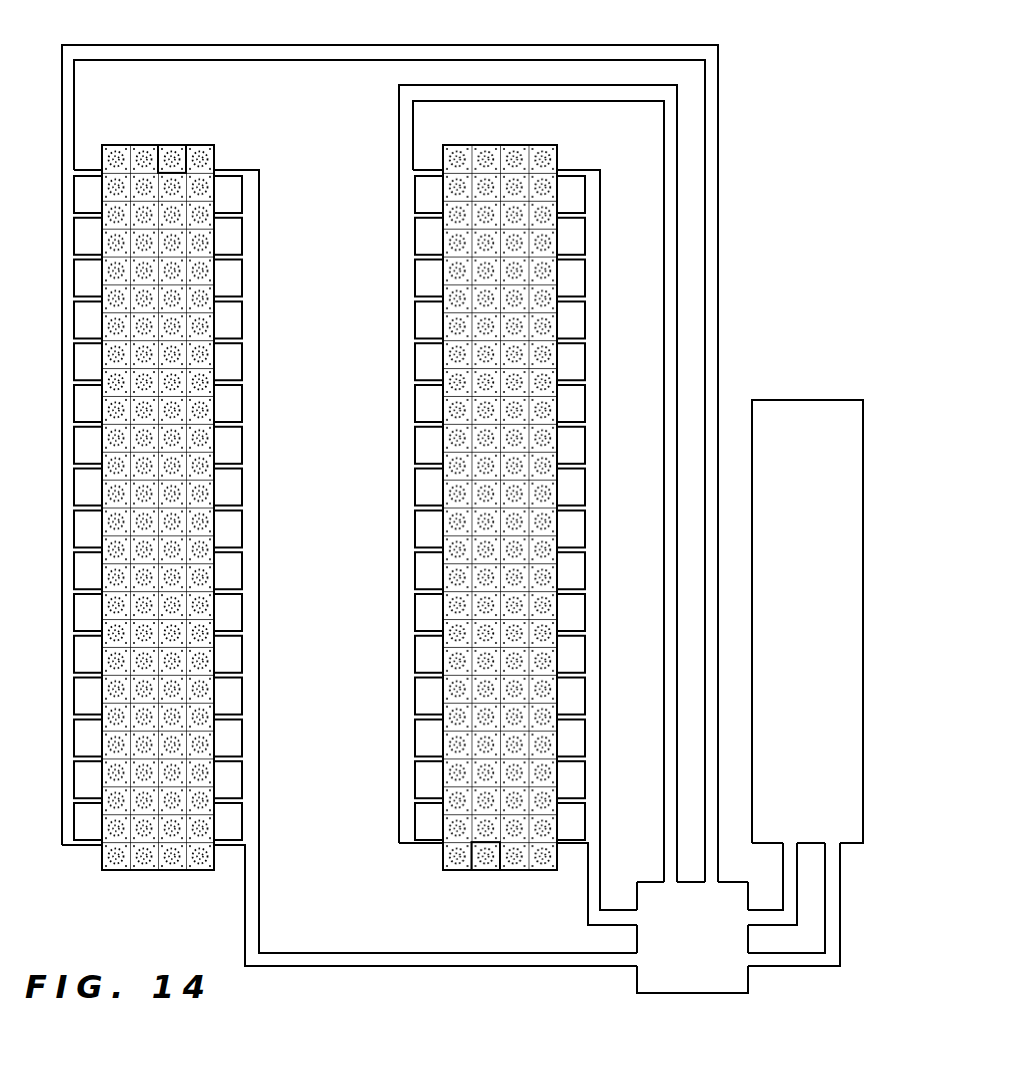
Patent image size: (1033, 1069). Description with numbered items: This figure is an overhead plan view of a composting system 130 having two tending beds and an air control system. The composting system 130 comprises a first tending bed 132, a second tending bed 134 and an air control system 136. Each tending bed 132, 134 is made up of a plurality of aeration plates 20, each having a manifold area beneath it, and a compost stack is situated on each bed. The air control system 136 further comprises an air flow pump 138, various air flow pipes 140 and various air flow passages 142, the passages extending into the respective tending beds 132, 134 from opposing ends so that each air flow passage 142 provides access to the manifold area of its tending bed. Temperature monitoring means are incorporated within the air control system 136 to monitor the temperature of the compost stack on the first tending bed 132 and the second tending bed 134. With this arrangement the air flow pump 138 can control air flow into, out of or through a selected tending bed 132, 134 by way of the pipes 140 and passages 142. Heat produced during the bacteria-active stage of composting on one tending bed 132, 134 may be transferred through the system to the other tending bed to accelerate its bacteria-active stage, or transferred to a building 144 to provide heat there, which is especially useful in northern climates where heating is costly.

The aeration plate 20 is at (163, 143).
The composting system 130 is at (151, 921).
The first tending bed 132 is at (245, 137).
The second tending bed 134 is at (520, 144).
The air control system 136 is at (660, 994).
The air flow pump 138 is at (727, 994).
The air flow pipe 140 is at (494, 44).
The air flow passage 142 is at (228, 170).
The building 144 is at (781, 400).